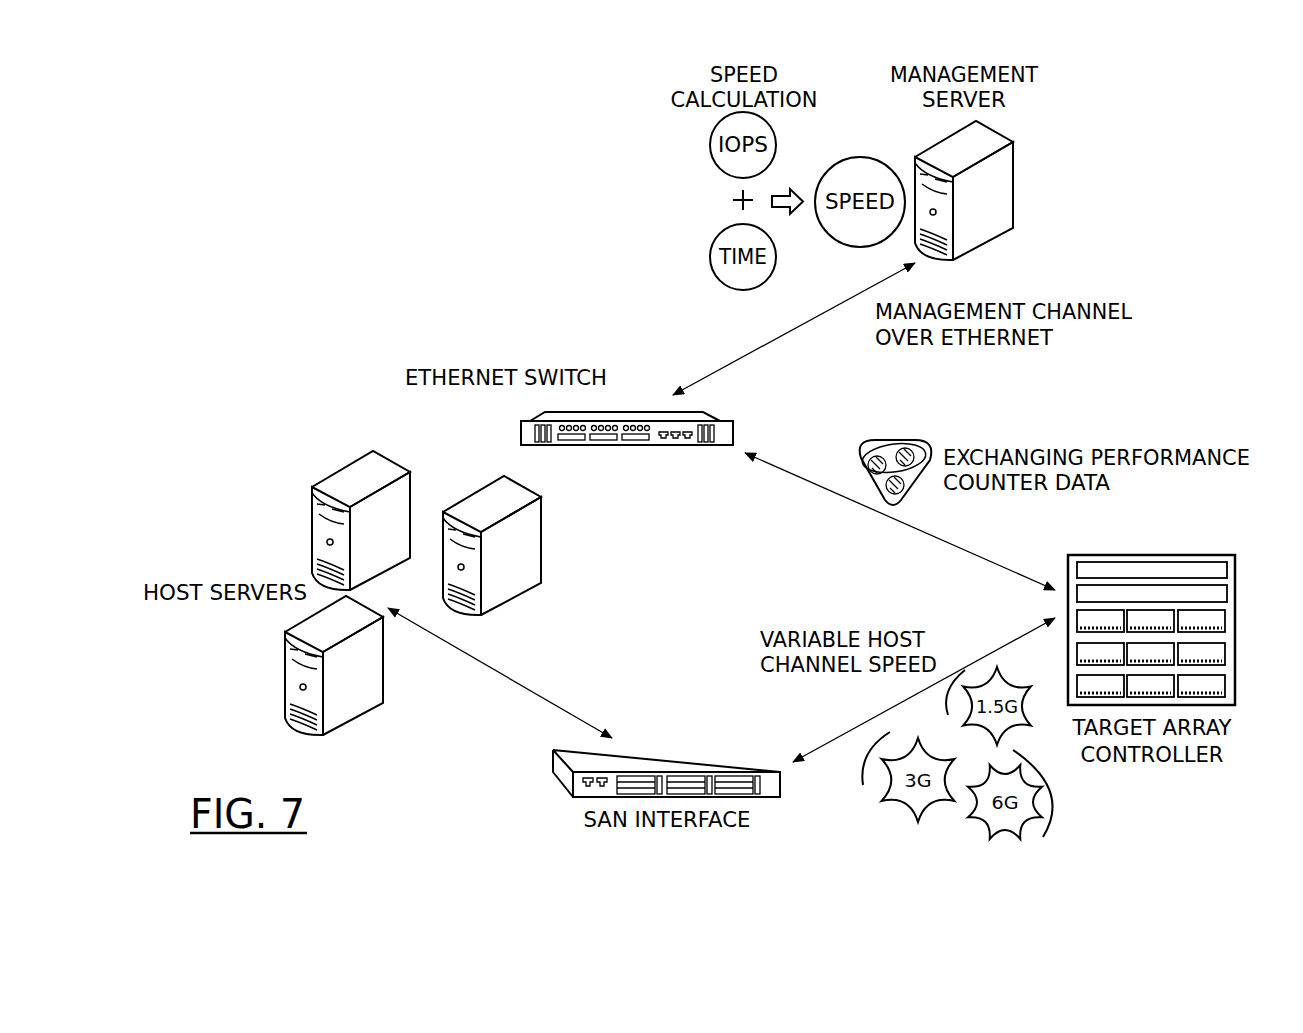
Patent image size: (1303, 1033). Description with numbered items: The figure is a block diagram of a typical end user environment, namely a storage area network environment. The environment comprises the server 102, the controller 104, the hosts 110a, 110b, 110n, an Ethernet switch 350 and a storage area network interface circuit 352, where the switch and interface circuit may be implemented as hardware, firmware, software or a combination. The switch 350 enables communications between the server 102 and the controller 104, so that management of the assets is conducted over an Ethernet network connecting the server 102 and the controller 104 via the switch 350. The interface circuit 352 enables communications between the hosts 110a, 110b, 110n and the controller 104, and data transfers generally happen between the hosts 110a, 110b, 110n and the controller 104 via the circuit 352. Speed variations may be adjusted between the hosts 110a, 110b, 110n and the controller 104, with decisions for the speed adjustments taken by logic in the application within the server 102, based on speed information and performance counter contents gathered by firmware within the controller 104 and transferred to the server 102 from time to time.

The server 102 is at (1017, 180).
The Ethernet switch 350 is at (735, 423).
The host 110a is at (312, 502).
The host 110b is at (542, 532).
The host 110n is at (383, 693).
The storage area network interface circuit 352 is at (700, 750).
The controller 104 is at (1122, 553).